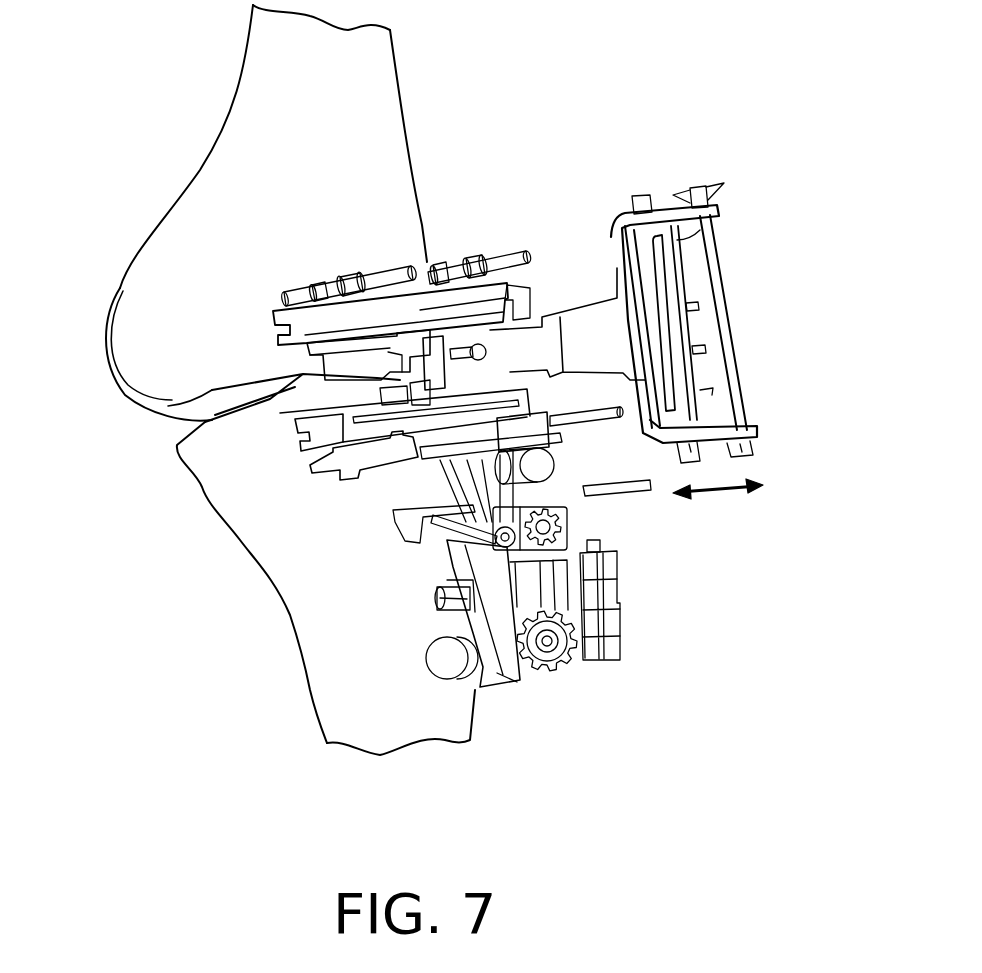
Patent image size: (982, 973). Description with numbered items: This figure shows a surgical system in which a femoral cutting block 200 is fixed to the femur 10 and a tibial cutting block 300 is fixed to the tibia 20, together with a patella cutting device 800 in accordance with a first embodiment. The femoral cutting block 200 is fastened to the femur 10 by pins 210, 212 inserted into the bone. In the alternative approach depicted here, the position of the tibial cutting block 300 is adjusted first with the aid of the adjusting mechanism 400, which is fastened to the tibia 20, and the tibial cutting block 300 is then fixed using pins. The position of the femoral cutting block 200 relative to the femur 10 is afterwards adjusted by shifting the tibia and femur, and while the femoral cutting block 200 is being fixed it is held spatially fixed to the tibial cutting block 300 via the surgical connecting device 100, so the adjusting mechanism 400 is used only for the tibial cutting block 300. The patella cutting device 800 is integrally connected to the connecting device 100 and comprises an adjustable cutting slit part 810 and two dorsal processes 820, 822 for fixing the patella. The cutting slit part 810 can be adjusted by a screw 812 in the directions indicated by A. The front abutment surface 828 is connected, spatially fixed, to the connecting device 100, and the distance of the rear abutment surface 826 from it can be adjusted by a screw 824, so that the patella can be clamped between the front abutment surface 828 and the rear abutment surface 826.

The femur 10 is at (250, 142).
The tibia 20 is at (322, 610).
The surgical connecting device 100 is at (500, 345).
The femoral cutting block 200 is at (310, 286).
The pin 210 is at (385, 266).
The pin 212 is at (497, 265).
The tibial cutting block 300 is at (285, 458).
The adjusting mechanism 400 is at (635, 597).
The patella cutting device 800 is at (732, 317).
The adjustable cutting slit part 810 is at (700, 390).
The screw 812 is at (642, 193).
The dorsal process 820 is at (698, 307).
The dorsal process 822 is at (705, 348).
The screw 824 is at (688, 190).
The rear abutment surface 826 is at (692, 280).
The front abutment surface 828 is at (590, 345).